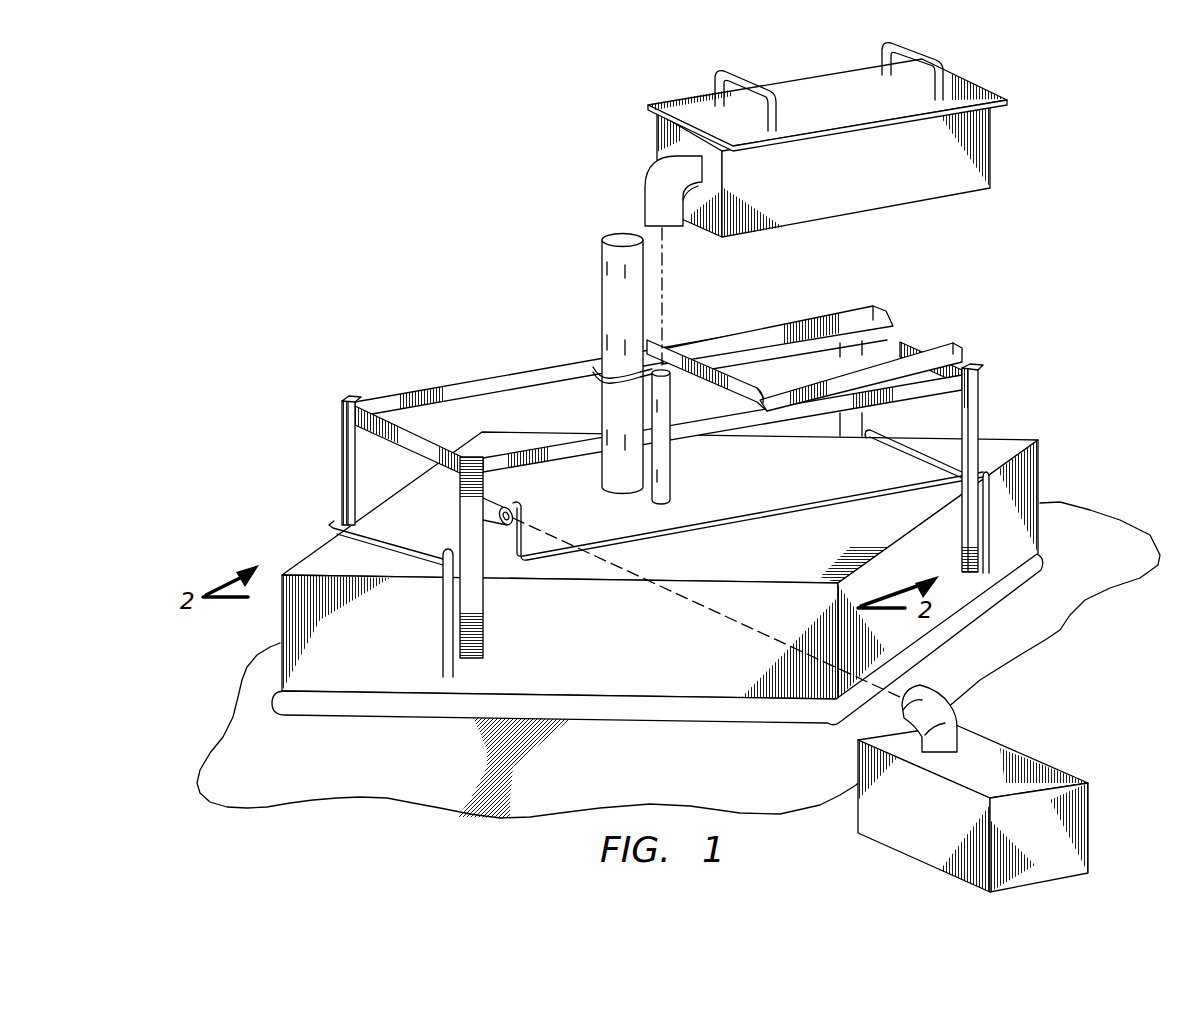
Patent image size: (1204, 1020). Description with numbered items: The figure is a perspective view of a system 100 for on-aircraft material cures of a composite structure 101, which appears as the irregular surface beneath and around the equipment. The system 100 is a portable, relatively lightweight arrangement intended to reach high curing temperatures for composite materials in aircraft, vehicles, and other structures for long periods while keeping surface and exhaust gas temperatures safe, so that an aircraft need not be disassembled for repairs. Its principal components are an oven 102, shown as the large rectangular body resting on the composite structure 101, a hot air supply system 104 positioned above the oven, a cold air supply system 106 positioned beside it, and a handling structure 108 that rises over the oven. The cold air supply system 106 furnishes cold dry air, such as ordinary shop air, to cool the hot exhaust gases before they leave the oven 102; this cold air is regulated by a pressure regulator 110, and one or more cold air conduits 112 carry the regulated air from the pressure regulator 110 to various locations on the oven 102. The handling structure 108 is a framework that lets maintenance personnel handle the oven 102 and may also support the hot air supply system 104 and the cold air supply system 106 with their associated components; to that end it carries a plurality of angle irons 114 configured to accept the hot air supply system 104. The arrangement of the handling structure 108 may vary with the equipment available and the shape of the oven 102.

The system 100 is at (553, 156).
The composite structure 101 is at (1045, 618).
The oven 102 is at (1010, 443).
The hot air supply system 104 is at (905, 191).
The cold air supply system 106 is at (1066, 850).
The handling structure 108 is at (512, 378).
The pressure regulator 110 is at (497, 493).
The cold air conduits 112 is at (423, 552).
The angle irons 114 is at (850, 310).